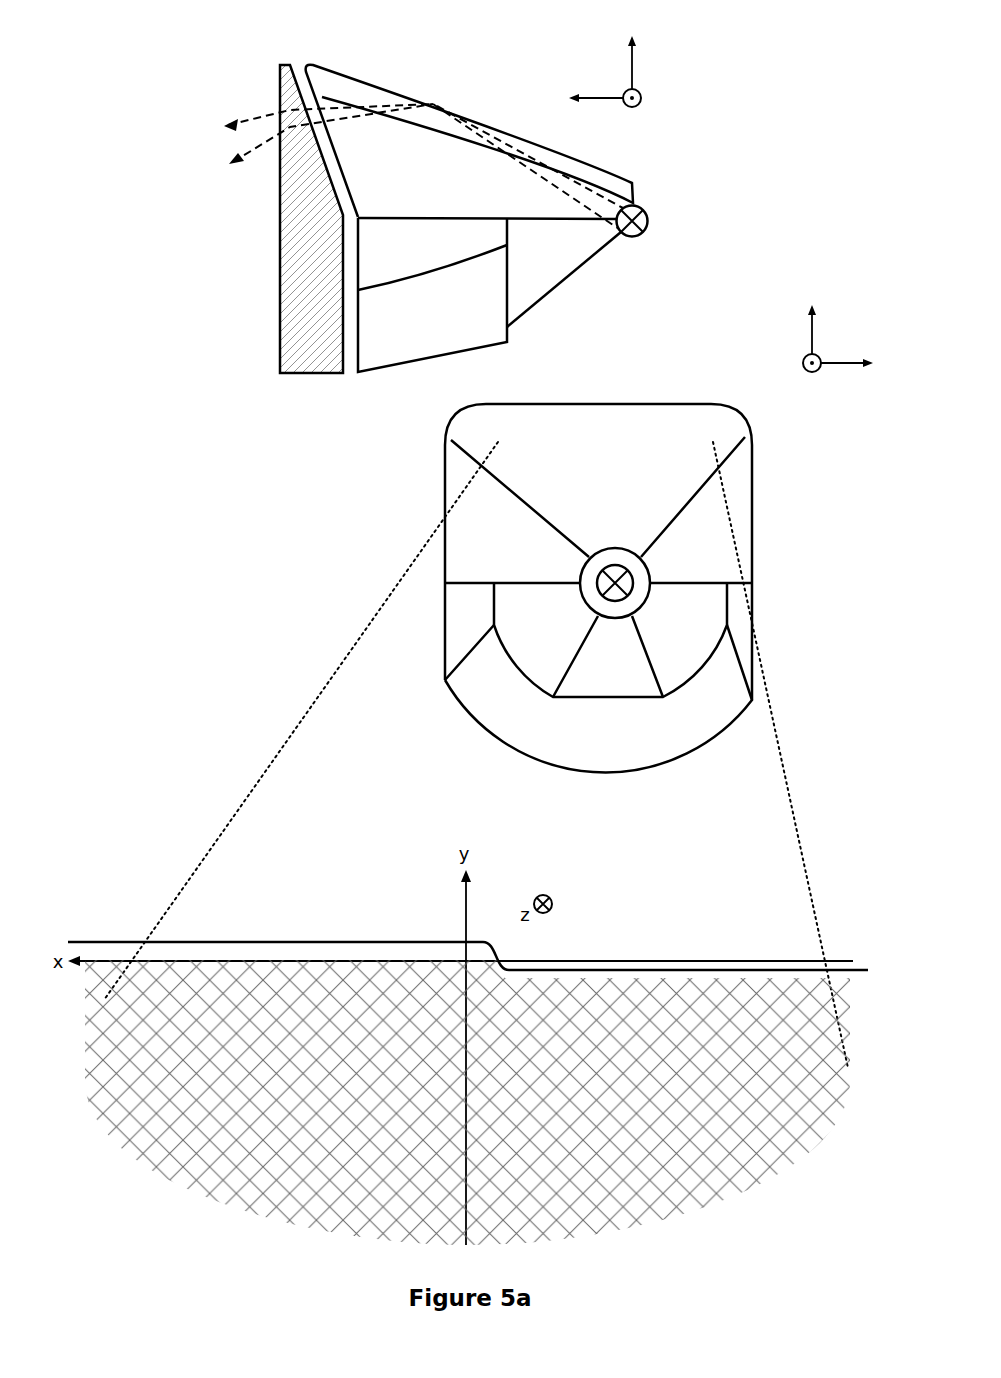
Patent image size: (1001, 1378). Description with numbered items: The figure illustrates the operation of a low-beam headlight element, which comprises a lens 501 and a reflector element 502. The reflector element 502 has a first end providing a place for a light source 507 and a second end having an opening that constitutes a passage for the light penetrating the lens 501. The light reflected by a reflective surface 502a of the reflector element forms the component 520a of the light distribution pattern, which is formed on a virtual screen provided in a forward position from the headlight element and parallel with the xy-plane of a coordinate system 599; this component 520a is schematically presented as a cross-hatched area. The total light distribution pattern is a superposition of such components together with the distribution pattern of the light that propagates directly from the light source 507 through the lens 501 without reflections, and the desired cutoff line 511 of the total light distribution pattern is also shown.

The lens 501 is at (280, 307).
The reflector element 502 is at (338, 72).
The light source 507 is at (650, 221).
The desired cutoff line 511 is at (269, 942).
The coordinate system 599 is at (612, 82).
The reflective surface 502a is at (583, 477).
The component of the light distribution pattern 520a is at (405, 1099).